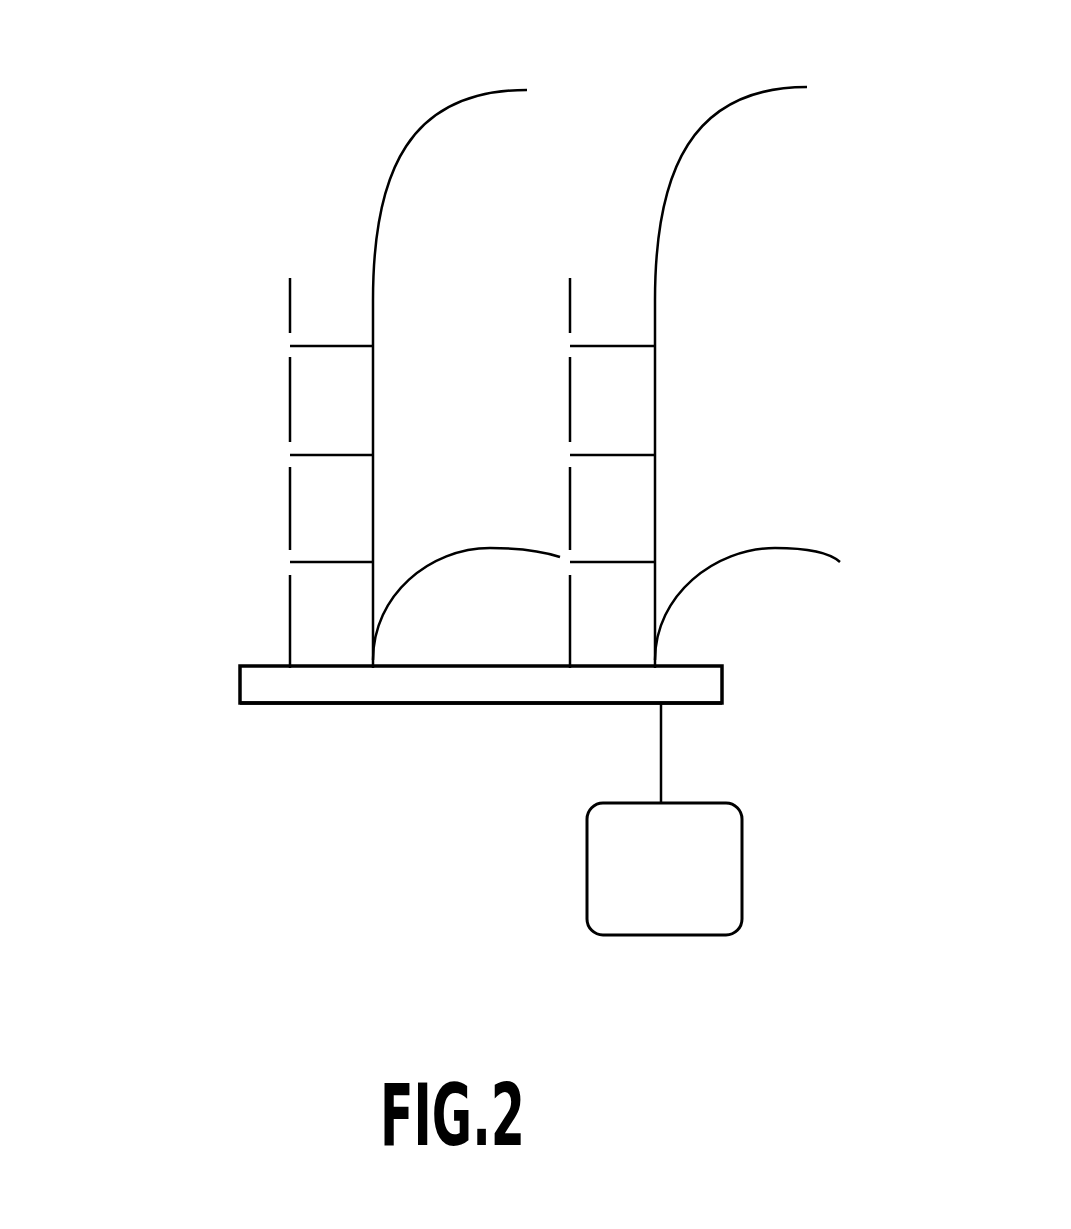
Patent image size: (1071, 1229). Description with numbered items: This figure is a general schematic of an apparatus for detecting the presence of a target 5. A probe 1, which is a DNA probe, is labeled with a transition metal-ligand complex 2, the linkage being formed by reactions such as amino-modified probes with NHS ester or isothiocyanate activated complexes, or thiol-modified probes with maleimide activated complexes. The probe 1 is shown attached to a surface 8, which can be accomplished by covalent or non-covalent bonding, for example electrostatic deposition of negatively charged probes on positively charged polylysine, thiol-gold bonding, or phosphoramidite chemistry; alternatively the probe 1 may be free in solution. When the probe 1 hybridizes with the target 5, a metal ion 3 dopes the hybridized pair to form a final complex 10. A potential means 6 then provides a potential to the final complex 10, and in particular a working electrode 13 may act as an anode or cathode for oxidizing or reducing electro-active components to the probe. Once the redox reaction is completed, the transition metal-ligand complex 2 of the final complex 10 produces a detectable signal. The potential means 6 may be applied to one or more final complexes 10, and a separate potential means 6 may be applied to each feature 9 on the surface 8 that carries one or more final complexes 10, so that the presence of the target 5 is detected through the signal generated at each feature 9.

The probe 1 is at (290, 478).
The transition metal-ligand complex 2 is at (273, 215).
The metal ion 3 is at (305, 345).
The target 5 is at (470, 105).
The potential means 6 is at (783, 697).
The surface 8 is at (212, 626).
The feature 9 is at (413, 732).
The final complex 10 is at (430, 395).
The working electrode 13 is at (185, 695).